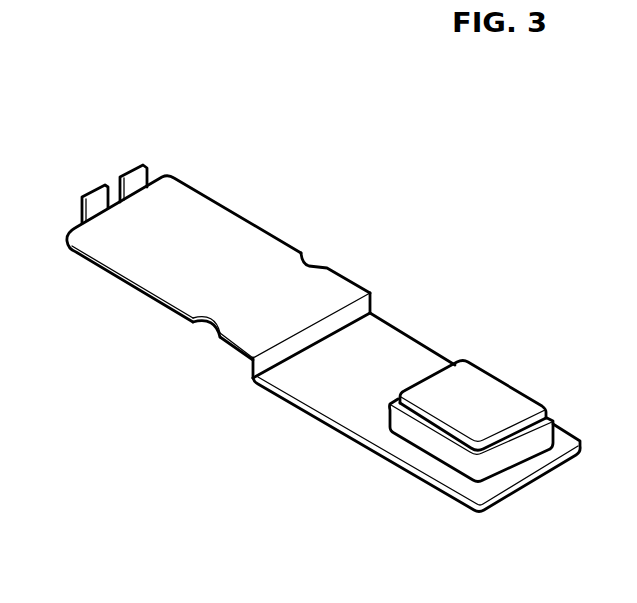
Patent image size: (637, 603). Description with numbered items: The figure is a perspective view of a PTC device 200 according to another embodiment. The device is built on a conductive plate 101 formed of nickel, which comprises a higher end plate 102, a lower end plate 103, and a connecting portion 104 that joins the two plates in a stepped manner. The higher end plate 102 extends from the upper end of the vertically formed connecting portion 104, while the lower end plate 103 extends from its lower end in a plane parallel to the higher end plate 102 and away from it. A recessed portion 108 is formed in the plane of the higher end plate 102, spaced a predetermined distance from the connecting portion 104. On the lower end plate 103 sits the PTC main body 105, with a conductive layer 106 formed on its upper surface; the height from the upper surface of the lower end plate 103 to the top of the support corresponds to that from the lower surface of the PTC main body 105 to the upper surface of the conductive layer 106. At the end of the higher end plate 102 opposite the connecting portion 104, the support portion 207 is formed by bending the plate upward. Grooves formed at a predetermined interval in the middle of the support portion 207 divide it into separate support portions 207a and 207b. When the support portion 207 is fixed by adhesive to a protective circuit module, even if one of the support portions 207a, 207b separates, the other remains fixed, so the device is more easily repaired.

The PTC device 200 is at (602, 117).
The conductive plate 101 is at (483, 277).
The higher end plate 102 is at (268, 237).
The lower end plate 103 is at (417, 343).
The connecting portion 104 is at (363, 303).
The PTC main body 105 is at (417, 437).
The conductive layer 106 is at (485, 425).
The recessed portion 108 is at (203, 327).
The support portion 207 is at (99, 104).
The support portion 207a is at (135, 178).
The support portion 207b is at (97, 198).